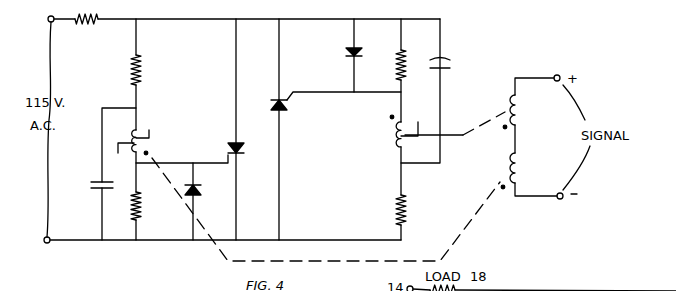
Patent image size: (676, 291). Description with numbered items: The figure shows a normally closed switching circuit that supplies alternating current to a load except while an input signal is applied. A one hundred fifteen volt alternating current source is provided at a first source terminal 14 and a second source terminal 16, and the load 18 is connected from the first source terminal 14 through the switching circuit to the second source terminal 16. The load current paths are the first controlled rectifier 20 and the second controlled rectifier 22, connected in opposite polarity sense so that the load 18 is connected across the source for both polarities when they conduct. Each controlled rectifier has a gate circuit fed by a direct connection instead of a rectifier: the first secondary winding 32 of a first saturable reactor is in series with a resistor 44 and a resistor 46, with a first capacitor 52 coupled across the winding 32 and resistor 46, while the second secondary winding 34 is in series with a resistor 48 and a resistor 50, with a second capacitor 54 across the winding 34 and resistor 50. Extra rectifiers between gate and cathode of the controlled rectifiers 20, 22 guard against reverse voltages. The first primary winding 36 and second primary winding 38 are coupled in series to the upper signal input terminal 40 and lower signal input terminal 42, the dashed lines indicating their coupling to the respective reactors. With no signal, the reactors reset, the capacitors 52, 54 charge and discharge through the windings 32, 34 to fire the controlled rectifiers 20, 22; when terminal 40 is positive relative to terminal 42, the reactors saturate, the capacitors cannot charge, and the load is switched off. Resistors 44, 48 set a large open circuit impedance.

The first source terminal 14 is at (48, 18).
The second source terminal 16 is at (45, 243).
The load 18 is at (100, 12).
The first controlled rectifier 20 is at (230, 145).
The second controlled rectifier 22 is at (288, 108).
The first secondary winding 32 is at (140, 131).
The second secondary winding 34 is at (398, 145).
The first primary winding 36 is at (520, 168).
The second primary winding 38 is at (520, 108).
The upper signal input terminal 40 is at (561, 76).
The lower signal input terminal 42 is at (561, 200).
The resistor 44 is at (142, 67).
The resistor 46 is at (141, 210).
The resistor 48 is at (408, 206).
The resistor 50 is at (396, 62).
The first capacitor 52 is at (95, 181).
The second capacitor 54 is at (447, 60).